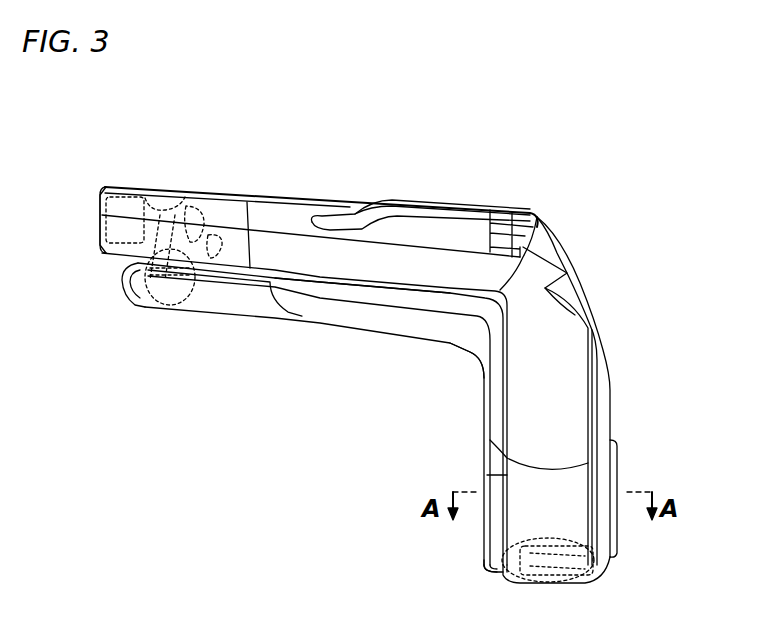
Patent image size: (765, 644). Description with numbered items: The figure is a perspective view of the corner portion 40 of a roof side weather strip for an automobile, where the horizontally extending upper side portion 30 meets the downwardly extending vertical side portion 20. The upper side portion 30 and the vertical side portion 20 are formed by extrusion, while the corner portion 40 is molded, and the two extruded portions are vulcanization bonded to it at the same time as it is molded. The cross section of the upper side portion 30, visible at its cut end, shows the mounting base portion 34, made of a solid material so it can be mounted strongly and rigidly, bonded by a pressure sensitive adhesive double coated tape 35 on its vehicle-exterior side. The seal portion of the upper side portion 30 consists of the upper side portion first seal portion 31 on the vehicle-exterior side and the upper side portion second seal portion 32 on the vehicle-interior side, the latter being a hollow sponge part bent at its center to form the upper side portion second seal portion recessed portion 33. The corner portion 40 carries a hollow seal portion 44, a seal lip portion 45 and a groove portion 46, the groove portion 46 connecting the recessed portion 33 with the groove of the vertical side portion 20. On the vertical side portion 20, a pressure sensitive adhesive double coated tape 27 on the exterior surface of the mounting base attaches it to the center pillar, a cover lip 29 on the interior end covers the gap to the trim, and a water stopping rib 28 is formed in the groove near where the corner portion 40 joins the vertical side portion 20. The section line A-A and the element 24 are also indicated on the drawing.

The vertical side portion 20 is at (537, 513).
The end cap 24 is at (553, 587).
The pressure sensitive adhesive double coated tape 27 is at (603, 355).
The water stopping rib 28 is at (487, 475).
The cover lip 29 is at (486, 562).
The upper side portion 30 is at (202, 200).
The upper side portion first seal portion 31 is at (102, 243).
The upper side portion second seal portion 32 is at (133, 300).
The upper side portion second seal portion recessed portion 33 is at (147, 310).
The mounting base portion 34 is at (122, 188).
The pressure sensitive adhesive double coated tape 35 is at (157, 185).
The corner portion 40 is at (586, 320).
The hollow seal portion 44 is at (415, 269).
The seal lip portion 45 is at (490, 357).
The groove portion 46 is at (417, 289).